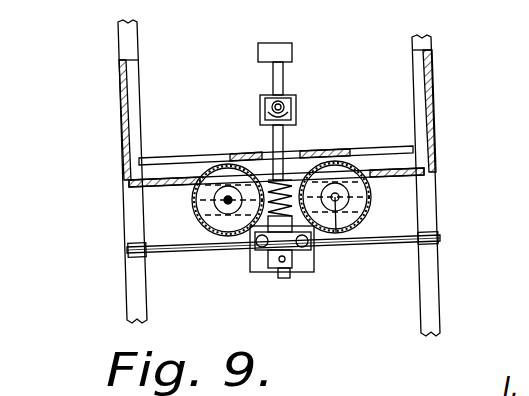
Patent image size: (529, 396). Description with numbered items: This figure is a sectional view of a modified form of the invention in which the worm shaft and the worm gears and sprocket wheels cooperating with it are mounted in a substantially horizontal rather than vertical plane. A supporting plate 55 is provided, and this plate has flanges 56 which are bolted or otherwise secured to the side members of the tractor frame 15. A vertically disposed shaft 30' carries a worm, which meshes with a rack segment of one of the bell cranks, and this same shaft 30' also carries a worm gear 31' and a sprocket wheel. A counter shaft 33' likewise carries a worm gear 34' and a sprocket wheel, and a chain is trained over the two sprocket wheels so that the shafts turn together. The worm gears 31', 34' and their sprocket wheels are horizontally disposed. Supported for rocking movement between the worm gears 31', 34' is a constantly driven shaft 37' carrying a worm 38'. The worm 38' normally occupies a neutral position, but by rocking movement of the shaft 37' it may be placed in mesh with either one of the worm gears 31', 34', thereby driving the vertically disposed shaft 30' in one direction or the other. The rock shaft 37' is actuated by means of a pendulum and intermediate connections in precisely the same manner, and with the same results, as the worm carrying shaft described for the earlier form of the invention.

The tractor frame 15 is at (132, 48).
The flanges 56 is at (120, 105).
The supporting plate 55 is at (401, 177).
The counter shaft 33' is at (283, 257).
The vertically disposed shaft 30' is at (200, 211).
The worm gear 31' is at (223, 178).
The worm gear 34' is at (335, 175).
The constantly driven shaft 37' is at (257, 111).
The worm 38' is at (304, 118).